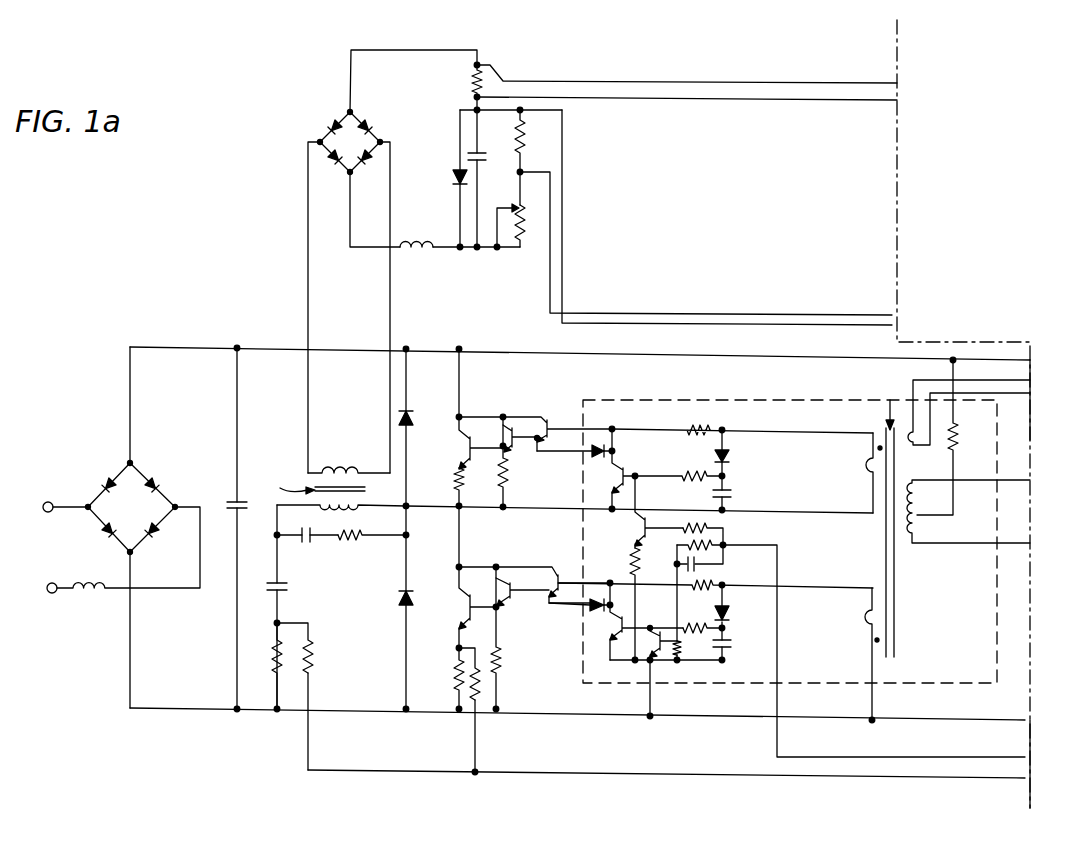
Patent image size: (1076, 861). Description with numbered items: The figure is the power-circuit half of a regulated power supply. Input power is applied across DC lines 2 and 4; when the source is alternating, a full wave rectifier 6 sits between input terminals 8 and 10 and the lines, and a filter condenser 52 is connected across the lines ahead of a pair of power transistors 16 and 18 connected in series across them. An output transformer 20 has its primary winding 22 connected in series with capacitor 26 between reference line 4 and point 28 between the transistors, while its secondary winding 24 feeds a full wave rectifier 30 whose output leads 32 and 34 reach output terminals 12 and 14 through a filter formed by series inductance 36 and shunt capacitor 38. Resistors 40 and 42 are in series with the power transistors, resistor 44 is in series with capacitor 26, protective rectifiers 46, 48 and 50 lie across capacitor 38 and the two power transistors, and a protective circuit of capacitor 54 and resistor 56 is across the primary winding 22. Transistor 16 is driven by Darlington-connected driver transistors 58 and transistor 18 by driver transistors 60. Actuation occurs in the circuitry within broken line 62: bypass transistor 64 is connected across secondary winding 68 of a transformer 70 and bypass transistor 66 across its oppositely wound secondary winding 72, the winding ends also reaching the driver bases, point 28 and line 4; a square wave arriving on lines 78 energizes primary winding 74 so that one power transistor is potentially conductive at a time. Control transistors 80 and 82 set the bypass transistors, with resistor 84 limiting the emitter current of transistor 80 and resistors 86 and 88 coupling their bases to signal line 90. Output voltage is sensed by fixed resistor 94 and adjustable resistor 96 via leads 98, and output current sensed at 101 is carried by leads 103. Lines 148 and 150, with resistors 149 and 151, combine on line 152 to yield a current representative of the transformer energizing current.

The DC line 2 is at (199, 347).
The DC line 4 is at (203, 710).
The full wave rectifier 6 is at (142, 480).
The input terminal 8 is at (52, 504).
The input terminal 10 is at (54, 594).
The output terminal 12 is at (479, 111).
The output terminal 14 is at (478, 252).
The power transistor 16 is at (458, 445).
The power transistor 18 is at (458, 610).
The output transformer 20 is at (288, 481).
The primary winding 22 is at (350, 512).
The secondary winding 24 is at (358, 460).
The capacitor 26 is at (290, 588).
The point 28 is at (409, 505).
The full wave rectifier 30 is at (362, 133).
The output lead 32 is at (424, 50).
The output lead 34 is at (447, 253).
The series inductance 36 is at (412, 255).
The shunt capacitor 38 is at (486, 163).
The resistor 40 is at (463, 478).
The resistor 42 is at (452, 674).
The resistor 44 is at (268, 662).
The protective rectifier 46 is at (456, 180).
The protective rectifier 48 is at (412, 423).
The protective rectifier 50 is at (410, 603).
The filter condenser 52 is at (232, 503).
The capacitor 54 is at (308, 545).
The resistor 56 is at (360, 545).
The Darlington-connected driver transistors 58 is at (545, 425).
The Darlington-connected driver transistors 60 is at (553, 580).
The broken line 62 is at (719, 399).
The bypass transistor 64 is at (615, 475).
The bypass transistor 66 is at (620, 626).
The secondary winding 68 is at (870, 466).
The transformer 70 is at (886, 518).
The secondary winding 72 is at (870, 619).
The primary winding 74 is at (920, 530).
The lines 78 is at (1010, 486).
The control transistor 80 is at (640, 526).
The control transistor 82 is at (655, 633).
The resistor 84 is at (640, 565).
The resistor 86 is at (705, 530).
The resistor 88 is at (728, 545).
The signal line 90 is at (778, 638).
The fixed resistor 94 is at (524, 133).
The adjustable resistor 96 is at (525, 230).
The leads 98 is at (562, 238).
The current sensing point 101 is at (469, 80).
The leads 103 is at (762, 100).
The line 148 is at (314, 690).
The resistor 149 is at (316, 658).
The line 150 is at (478, 737).
The resistor 151 is at (480, 683).
The line 152 is at (655, 777).